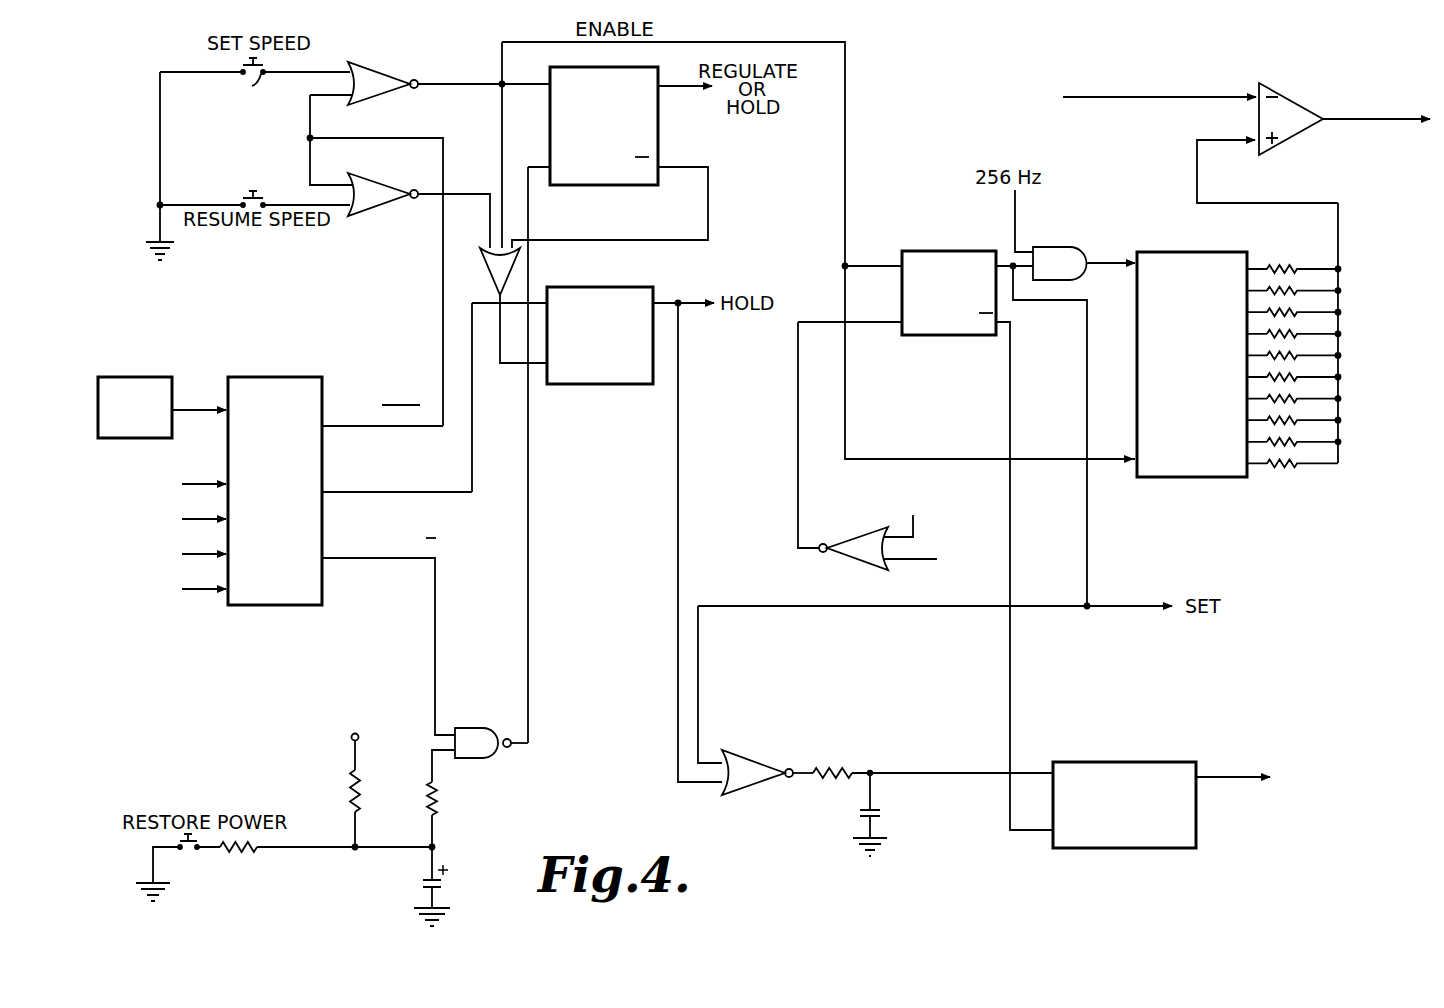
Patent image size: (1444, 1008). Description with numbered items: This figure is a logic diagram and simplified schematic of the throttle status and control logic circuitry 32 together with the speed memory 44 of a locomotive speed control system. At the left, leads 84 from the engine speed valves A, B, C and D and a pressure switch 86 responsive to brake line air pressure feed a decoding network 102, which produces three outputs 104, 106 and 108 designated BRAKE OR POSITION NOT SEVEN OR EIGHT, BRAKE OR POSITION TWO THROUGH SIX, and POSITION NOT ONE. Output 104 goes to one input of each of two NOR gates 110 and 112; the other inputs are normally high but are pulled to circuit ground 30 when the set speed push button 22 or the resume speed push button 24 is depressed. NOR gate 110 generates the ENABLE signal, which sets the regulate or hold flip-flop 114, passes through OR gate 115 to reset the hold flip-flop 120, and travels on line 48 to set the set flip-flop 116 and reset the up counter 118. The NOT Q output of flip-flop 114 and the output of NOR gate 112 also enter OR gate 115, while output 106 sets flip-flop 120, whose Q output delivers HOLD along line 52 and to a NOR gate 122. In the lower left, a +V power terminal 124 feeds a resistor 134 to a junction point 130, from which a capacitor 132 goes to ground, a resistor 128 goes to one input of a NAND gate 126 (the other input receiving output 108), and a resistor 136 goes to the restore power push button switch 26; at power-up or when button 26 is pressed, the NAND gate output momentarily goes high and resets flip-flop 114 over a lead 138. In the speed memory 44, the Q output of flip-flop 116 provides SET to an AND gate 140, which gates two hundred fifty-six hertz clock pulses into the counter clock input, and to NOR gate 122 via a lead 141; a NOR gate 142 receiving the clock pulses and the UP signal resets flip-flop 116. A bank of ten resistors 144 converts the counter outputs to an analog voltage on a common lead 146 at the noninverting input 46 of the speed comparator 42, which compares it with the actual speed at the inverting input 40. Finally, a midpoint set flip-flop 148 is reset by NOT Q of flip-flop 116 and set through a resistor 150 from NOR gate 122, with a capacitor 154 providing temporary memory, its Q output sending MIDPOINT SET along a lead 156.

The set speed push button 22 is at (253, 78).
The resume speed push button 24 is at (245, 196).
The restore power push button switch 26 is at (189, 855).
The circuit ground 30 is at (156, 242).
The throttle status and control logic circuitry 32 is at (388, 346).
The inverting input 40 is at (1256, 93).
The speed comparator 42 is at (1284, 96).
The speed memory 44 is at (1210, 247).
The noninverting input 46 is at (1260, 150).
The line 48 is at (845, 112).
The line 52 is at (686, 301).
The leads 84 is at (192, 600).
The pressure switch 86 is at (134, 375).
The decoding network 102 is at (298, 605).
The output 104 is at (326, 428).
The output 106 is at (326, 494).
The output 108 is at (326, 560).
The NOR gate 110 is at (376, 68).
The NOR gate 112 is at (376, 206).
The regulate or hold flip-flop 114 is at (658, 150).
The OR gate 115 is at (487, 264).
The set flip-flop 116 is at (958, 251).
The up counter 118 is at (1183, 477).
The hold flip-flop 120 is at (598, 384).
The NOR gate 122 is at (758, 764).
The +V power terminal 124 is at (351, 739).
The NAND gate 126 is at (496, 727).
The resistor 128 is at (440, 791).
The junction point 130 is at (434, 846).
The capacitor 132 is at (441, 891).
The resistor 134 is at (349, 786).
The resistor 136 is at (255, 852).
The lead 138 is at (528, 537).
The AND gate 140 is at (1058, 247).
The lead 141 is at (698, 691).
The NOR gate 142 is at (858, 563).
The resistors 144 is at (1290, 474).
The common lead 146 is at (1338, 255).
The midpoint set flip-flop 148 is at (1115, 762).
The resistor 150 is at (840, 762).
The capacitor 154 is at (866, 811).
The lead 156 is at (1222, 776).